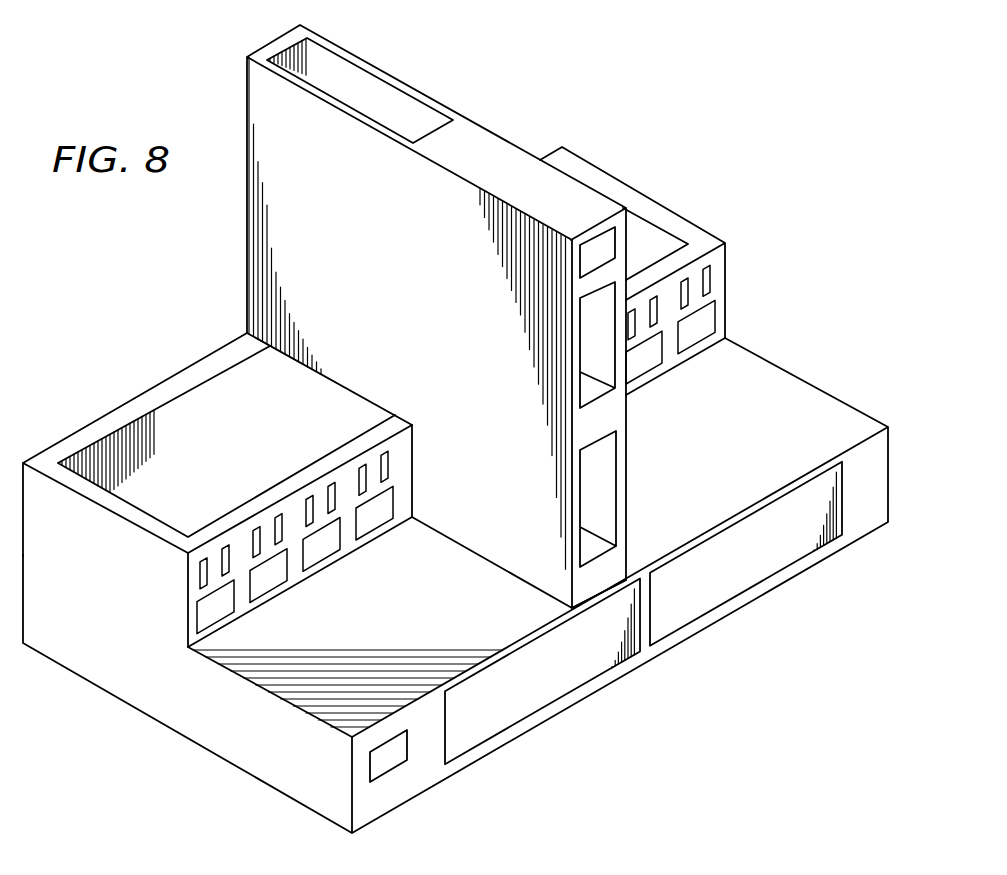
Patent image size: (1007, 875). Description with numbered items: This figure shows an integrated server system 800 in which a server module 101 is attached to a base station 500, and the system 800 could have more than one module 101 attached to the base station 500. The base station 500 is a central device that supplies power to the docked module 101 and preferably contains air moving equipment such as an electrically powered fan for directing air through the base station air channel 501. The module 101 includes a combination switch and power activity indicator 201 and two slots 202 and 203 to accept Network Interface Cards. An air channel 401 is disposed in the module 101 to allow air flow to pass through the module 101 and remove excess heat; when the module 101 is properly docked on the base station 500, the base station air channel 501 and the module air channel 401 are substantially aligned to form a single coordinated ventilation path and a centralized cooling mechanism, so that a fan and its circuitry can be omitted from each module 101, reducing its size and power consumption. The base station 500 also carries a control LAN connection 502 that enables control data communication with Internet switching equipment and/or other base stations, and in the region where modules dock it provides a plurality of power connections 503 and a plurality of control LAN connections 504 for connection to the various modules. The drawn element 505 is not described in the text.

The system 800 is at (778, 169).
The base station 500 is at (165, 708).
The server module 101 is at (482, 542).
The control LAN connection 502 is at (390, 755).
The power connections 503 is at (543, 678).
The base station air channel 501 is at (178, 410).
The air channel 401 is at (382, 76).
The combination switch and power activity indicator 201 is at (610, 243).
The slot 202 is at (617, 360).
The slot 203 is at (618, 487).
The control LAN connections 504 is at (705, 322).
The slot 505 is at (712, 281).